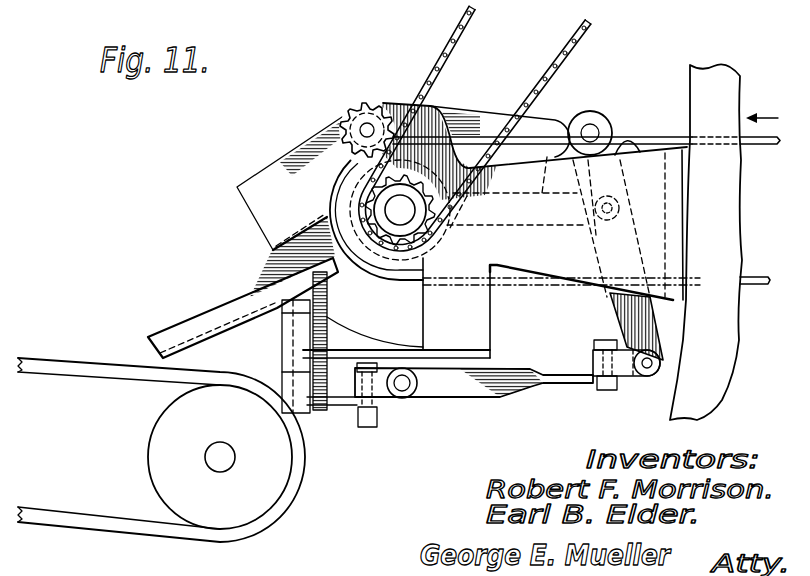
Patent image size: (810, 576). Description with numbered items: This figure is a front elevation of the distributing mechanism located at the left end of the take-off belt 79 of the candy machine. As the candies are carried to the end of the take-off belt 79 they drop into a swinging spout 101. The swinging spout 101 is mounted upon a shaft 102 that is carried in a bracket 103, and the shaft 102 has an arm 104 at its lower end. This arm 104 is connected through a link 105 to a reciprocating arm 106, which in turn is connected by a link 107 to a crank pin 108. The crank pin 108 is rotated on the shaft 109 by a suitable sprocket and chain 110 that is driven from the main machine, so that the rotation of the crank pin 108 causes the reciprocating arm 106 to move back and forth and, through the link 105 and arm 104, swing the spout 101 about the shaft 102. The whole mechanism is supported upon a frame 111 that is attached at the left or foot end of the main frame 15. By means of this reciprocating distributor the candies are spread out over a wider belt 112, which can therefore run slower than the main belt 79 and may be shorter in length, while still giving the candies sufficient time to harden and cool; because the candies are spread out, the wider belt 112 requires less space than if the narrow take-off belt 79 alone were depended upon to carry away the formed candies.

The main frame 15 is at (717, 385).
The take-off belt 79 is at (636, 136).
The swinging spout 101 is at (233, 283).
The shaft 102 is at (308, 301).
The bracket 103 is at (293, 339).
The arm 104 is at (362, 412).
The link 105 is at (463, 390).
The reciprocating arm 106 is at (627, 309).
The link 107 is at (547, 157).
The crank pin 108 is at (462, 242).
The shaft 109 is at (395, 209).
The sprocket and chain 110 is at (455, 36).
The frame 111 is at (668, 155).
The wider belt 112 is at (84, 366).